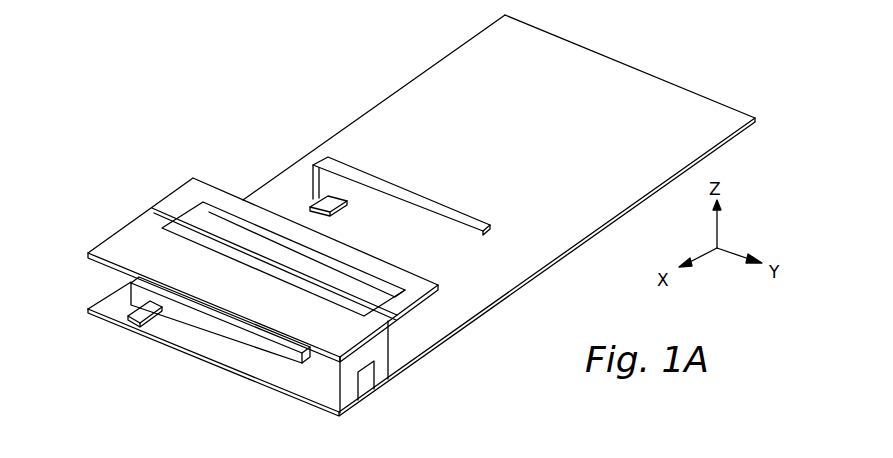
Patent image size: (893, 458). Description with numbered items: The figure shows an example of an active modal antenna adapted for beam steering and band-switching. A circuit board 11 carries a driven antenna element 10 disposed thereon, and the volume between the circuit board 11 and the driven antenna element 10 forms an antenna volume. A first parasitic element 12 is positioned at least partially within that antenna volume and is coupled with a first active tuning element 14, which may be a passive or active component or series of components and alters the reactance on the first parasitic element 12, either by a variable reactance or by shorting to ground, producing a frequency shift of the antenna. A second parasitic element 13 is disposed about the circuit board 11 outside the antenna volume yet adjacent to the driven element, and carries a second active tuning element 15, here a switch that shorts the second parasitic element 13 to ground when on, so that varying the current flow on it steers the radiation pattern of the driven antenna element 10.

The driven antenna element 10 is at (138, 222).
The circuit board 11 is at (385, 115).
The first parasitic element 12 is at (240, 338).
The second parasitic element 13 is at (418, 199).
The first active tuning element 14 is at (134, 308).
The second active tuning element 15 is at (333, 199).